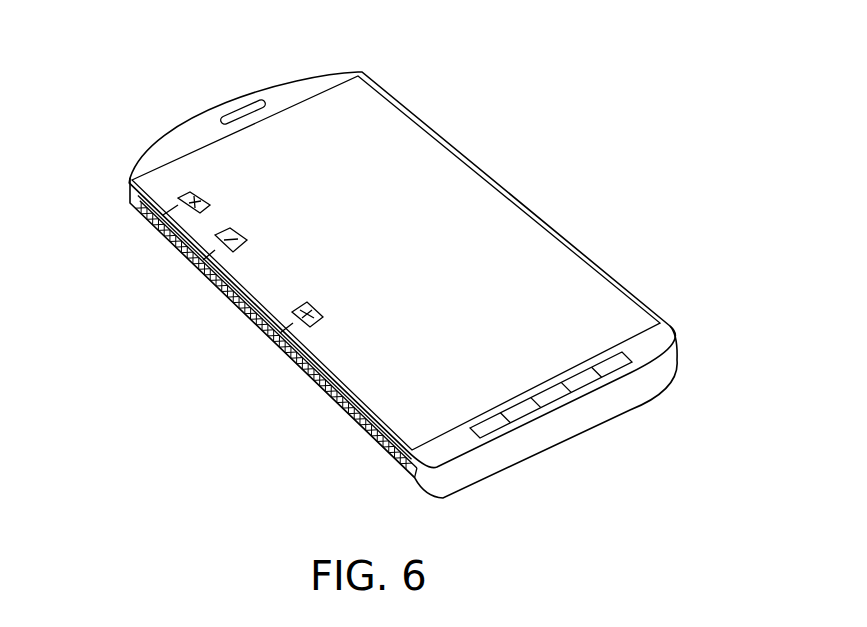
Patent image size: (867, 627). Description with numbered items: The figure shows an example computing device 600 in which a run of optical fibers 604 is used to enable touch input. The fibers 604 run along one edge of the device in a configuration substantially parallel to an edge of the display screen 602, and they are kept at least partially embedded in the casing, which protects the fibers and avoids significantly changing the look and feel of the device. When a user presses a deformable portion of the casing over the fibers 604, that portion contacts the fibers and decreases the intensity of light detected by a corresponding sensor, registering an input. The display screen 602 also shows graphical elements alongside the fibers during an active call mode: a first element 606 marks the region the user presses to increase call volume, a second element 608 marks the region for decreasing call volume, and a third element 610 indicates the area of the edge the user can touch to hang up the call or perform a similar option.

The computing device 600 is at (668, 142).
The display screen 602 is at (507, 230).
The run of optical fibers 604 is at (353, 423).
The first element 606 is at (137, 207).
The second element 608 is at (200, 260).
The third element 610 is at (287, 333).